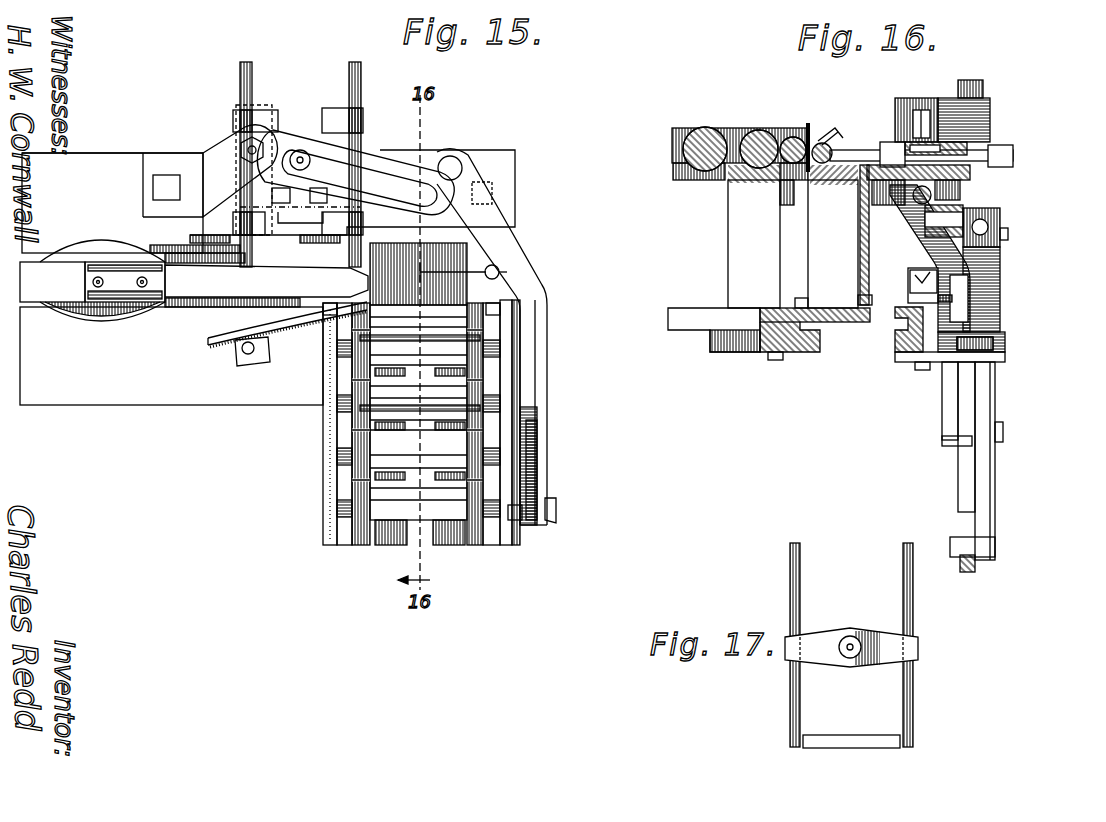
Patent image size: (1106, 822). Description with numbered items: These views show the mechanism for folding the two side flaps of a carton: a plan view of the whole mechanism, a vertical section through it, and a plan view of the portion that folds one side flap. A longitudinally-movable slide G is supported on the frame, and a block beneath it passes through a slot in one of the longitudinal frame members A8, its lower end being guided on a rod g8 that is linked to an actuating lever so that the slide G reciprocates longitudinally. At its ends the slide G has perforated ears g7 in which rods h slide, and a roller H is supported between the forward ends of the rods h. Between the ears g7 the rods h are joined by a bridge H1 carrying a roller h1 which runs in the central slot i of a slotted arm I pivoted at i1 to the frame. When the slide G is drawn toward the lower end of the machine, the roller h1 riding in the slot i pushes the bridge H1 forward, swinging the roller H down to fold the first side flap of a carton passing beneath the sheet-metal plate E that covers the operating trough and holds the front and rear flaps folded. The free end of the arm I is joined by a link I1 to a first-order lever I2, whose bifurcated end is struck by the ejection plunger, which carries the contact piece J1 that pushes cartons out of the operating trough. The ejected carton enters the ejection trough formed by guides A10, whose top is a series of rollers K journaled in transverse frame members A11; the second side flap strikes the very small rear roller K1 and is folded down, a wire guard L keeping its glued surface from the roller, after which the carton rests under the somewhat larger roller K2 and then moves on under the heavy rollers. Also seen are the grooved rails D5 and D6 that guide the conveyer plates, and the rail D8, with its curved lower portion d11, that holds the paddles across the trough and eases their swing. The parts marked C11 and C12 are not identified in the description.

In FIG. 15, the longitudinally-extending frame member A8 is at (267, 277).
In FIG. 16, the longitudinally-extending frame member A8 is at (1000, 168).
In FIG. 15, the rods h is at (246, 62).
In FIG. 16, the rods h is at (853, 145).
In FIG. 17, the rods h is at (901, 565).
In FIG. 15, the perforated ears g7 is at (468, 124).
In FIG. 15, the slide G is at (322, 110).
In FIG. 16, the slide G is at (1022, 190).
In FIG. 15, the pivot i1 is at (240, 150).
In FIG. 15, the bridge H1 is at (410, 148).
In FIG. 16, the bridge H1 is at (968, 140).
In FIG. 17, the bridge H1 is at (920, 648).
In FIG. 15, the roller h1 is at (300, 150).
In FIG. 16, the roller h1 is at (925, 108).
In FIG. 17, the roller h1 is at (850, 668).
In FIG. 15, the slotted arm I is at (505, 228).
In FIG. 16, the slotted arm I is at (960, 102).
In FIG. 15, the central slot i is at (542, 186).
In FIG. 15, the contact piece J1 is at (505, 252).
In FIG. 16, the contact piece J1 is at (870, 254).
In FIG. 15, the guard L is at (500, 278).
In FIG. 16, the guard L is at (830, 123).
In FIG. 15, the rollers K is at (420, 490).
In FIG. 16, the rollers K is at (698, 128).
In FIG. 15, the link I1 is at (545, 340).
In FIG. 15, the rear roller K1 is at (470, 330).
In FIG. 16, the rear roller K1 is at (793, 137).
In FIG. 15, the second roller K2 is at (478, 352).
In FIG. 16, the second roller K2 is at (756, 130).
In FIG. 15, the lever I2 is at (530, 472).
In FIG. 15, the transversely-extending frame members A11 is at (498, 565).
In FIG. 16, the transversely-extending frame members A11 is at (670, 152).
In FIG. 15, the sheet-metal plate E is at (194, 280).
In FIG. 15, the roller H is at (300, 322).
In FIG. 16, the roller H is at (822, 143).
In FIG. 17, the roller H is at (856, 750).
In FIG. 16, the rail D5 is at (800, 355).
In FIG. 16, the guides A10 is at (680, 310).
In FIG. 16, the rod g8 is at (912, 202).
In FIG. 16, the pin block C11 is at (985, 230).
In FIG. 16, the rail D8 is at (1005, 280).
In FIG. 16, the curved portion d11 is at (995, 308).
In FIG. 16, the rail D6 is at (912, 352).
In FIG. 16, the vertical rod C12 is at (998, 400).